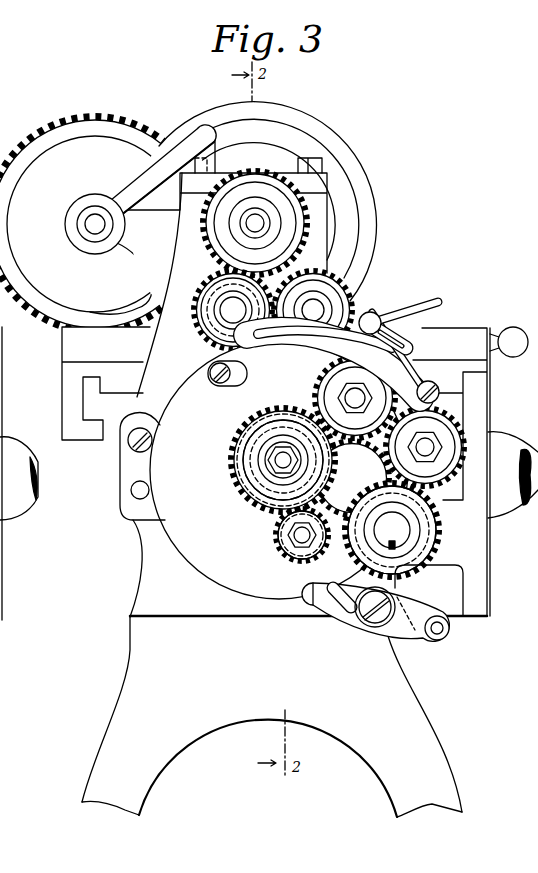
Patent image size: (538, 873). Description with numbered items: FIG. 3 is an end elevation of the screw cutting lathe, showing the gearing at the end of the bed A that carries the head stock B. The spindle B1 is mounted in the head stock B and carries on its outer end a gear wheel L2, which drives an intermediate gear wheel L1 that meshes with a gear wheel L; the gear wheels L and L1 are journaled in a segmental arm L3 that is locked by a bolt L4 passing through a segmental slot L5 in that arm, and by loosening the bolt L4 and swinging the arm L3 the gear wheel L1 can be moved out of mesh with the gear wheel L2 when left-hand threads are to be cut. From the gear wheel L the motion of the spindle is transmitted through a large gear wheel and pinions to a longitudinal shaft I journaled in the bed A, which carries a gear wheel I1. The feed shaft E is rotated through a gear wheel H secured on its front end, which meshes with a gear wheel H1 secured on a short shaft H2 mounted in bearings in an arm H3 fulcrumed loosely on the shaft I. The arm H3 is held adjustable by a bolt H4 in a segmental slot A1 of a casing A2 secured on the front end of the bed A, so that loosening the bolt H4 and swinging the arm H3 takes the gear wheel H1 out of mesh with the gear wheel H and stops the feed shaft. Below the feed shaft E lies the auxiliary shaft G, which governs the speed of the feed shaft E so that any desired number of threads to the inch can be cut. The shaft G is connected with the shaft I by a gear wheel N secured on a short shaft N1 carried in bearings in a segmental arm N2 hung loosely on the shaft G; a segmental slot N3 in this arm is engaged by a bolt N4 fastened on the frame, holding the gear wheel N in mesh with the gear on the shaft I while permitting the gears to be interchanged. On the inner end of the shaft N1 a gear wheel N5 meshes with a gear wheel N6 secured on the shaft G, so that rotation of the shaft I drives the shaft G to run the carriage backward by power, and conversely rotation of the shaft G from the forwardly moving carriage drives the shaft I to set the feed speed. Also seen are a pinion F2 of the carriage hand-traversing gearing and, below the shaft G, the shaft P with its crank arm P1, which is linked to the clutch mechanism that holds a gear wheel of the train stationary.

The bed A is at (134, 592).
The segmental slot A1 is at (303, 342).
The casing A2 is at (220, 400).
The head stock B is at (219, 271).
The spindle B1 is at (258, 224).
The feed shaft E is at (437, 433).
The pinion F2 is at (30, 476).
The auxiliary shaft G is at (400, 530).
The gear wheel H is at (450, 455).
The gear wheel H1 is at (337, 390).
The short shaft H2 is at (211, 380).
The arm H3 is at (340, 486).
The bolt H4 is at (413, 362).
The shaft I is at (280, 461).
The gear wheel I1 is at (236, 455).
The gear wheel L is at (338, 298).
The intermediate gear wheel L1 is at (197, 305).
The gear wheel L2 is at (208, 236).
The segmental arm L3 is at (380, 303).
The bolt L4 is at (380, 320).
The segmental slot L5 is at (408, 344).
The gear wheel N is at (273, 546).
The short shaft N1 is at (290, 556).
The segmental arm N2 is at (320, 594).
The segmental slot N3 is at (350, 610).
The bolt N4 is at (377, 627).
The gear wheel N5 is at (290, 578).
The gear wheel N6 is at (441, 548).
The shaft P is at (424, 584).
The crank arm P1 is at (449, 627).